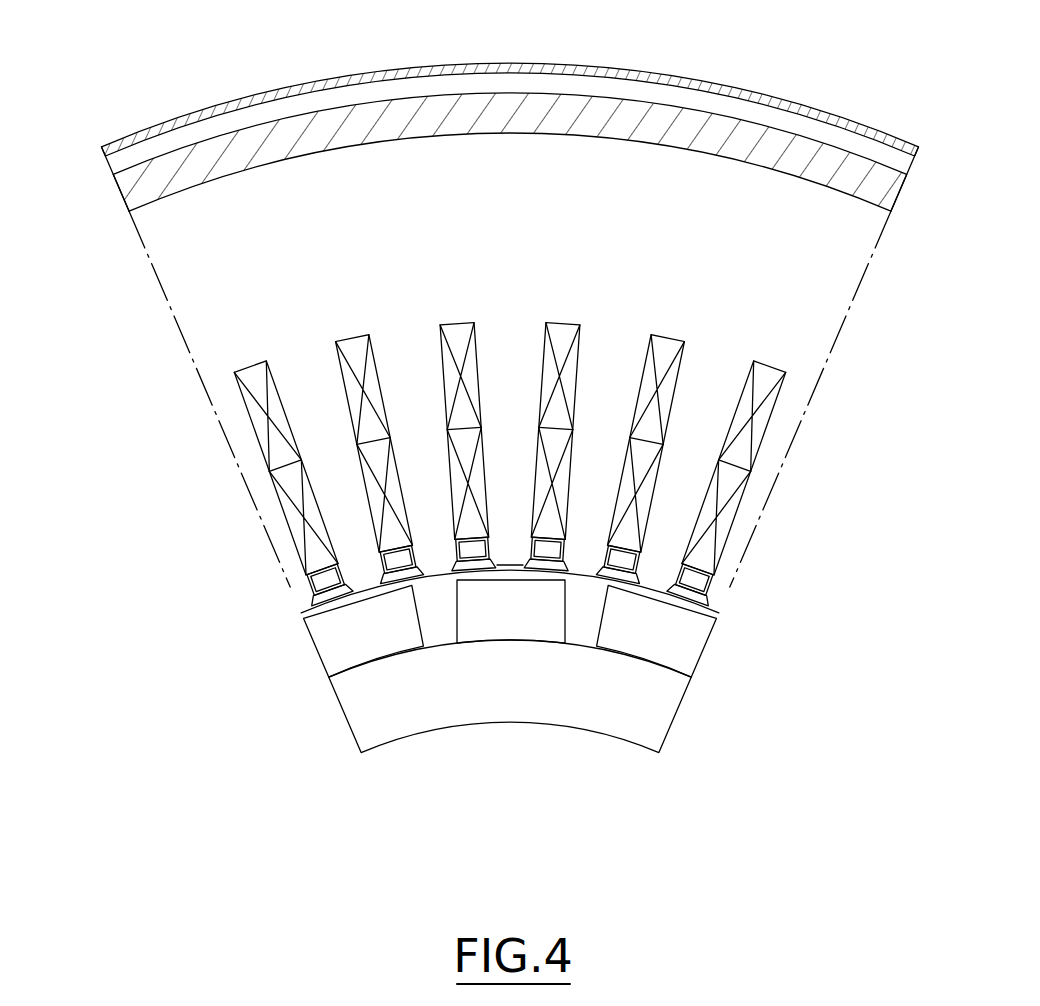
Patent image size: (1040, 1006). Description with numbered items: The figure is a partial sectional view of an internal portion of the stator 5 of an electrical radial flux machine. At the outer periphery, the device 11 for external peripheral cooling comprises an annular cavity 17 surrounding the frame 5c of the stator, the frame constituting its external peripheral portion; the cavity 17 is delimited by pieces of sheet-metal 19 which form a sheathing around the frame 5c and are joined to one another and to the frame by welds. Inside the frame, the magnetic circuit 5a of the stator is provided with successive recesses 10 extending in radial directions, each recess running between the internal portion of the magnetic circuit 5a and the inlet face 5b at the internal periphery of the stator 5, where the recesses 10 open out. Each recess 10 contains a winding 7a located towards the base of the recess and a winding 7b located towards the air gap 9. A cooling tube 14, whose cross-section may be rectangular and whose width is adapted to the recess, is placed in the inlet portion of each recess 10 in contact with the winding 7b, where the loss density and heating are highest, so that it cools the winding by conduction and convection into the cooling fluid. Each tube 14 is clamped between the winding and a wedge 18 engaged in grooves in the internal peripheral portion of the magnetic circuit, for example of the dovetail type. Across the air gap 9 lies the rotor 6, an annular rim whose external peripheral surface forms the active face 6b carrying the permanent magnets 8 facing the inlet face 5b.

The device for external peripheral cooling 11 is at (122, 102).
The pieces of sheet-metal 19 is at (229, 108).
The annular cavity 17 is at (725, 108).
The frame 5c is at (152, 180).
The magnetic circuit 5a is at (790, 270).
The stator 5 is at (780, 471).
The recesses 10 is at (347, 388).
The winding 7a is at (382, 410).
The winding 7b is at (385, 537).
The wedge 18 is at (623, 578).
The cooling tube 14 is at (508, 560).
The air gap 9 is at (722, 613).
The inlet face 5b is at (436, 578).
The permanent magnets 8 is at (530, 608).
The active face 6b is at (442, 630).
The rotor 6 is at (632, 707).